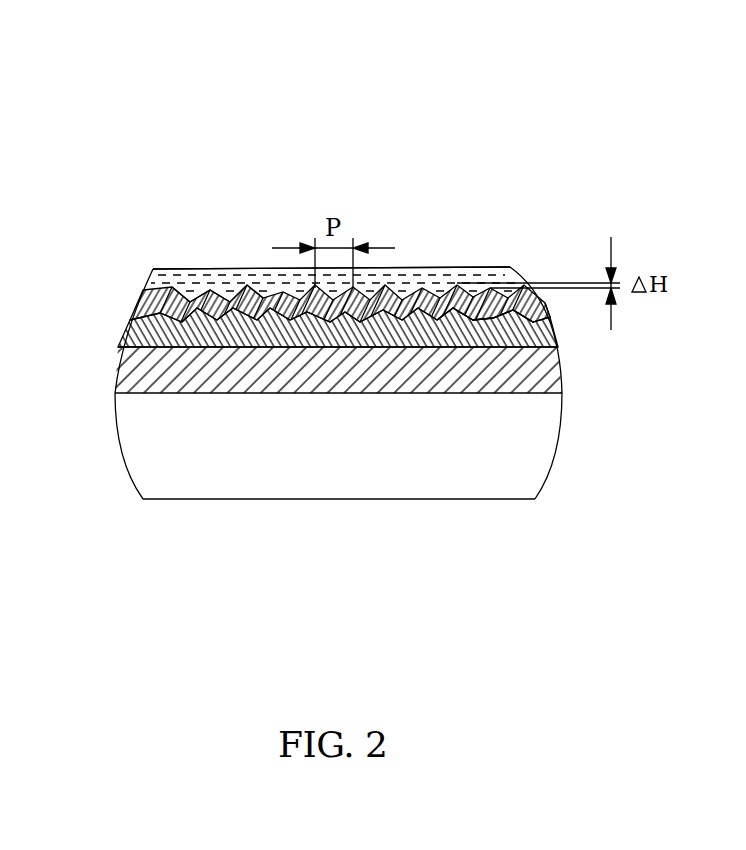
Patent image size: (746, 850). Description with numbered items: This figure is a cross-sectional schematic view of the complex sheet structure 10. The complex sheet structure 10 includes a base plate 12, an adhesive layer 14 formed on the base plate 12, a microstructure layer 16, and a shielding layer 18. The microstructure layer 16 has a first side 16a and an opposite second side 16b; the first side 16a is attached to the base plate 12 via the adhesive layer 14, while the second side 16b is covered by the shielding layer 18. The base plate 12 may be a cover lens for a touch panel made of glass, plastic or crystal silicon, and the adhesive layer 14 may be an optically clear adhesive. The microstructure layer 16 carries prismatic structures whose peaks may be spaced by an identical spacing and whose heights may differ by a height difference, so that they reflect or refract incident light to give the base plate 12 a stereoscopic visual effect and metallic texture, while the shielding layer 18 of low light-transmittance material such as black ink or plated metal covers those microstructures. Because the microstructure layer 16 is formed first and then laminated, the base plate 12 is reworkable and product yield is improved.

The complex sheet structure 10 is at (124, 88).
The base plate 12 is at (303, 483).
The adhesive layer 14 is at (130, 373).
The microstructure layer 16 is at (145, 310).
The first side 16a is at (553, 337).
The second side 16b is at (234, 296).
The shielding layer 18 is at (172, 266).